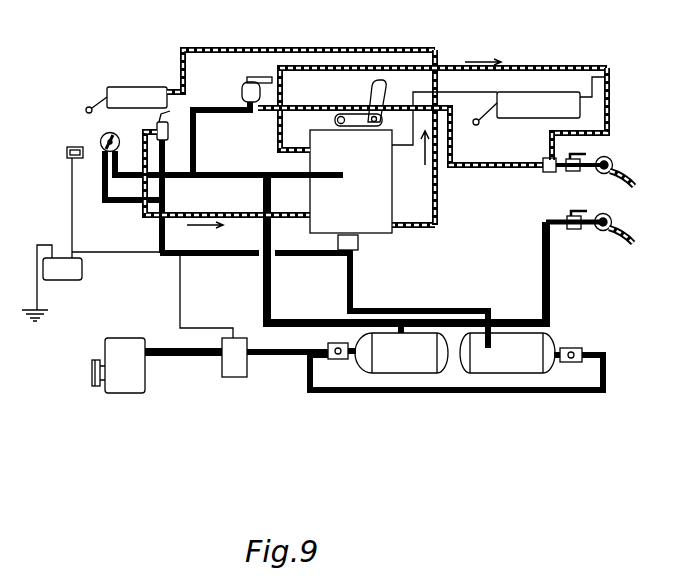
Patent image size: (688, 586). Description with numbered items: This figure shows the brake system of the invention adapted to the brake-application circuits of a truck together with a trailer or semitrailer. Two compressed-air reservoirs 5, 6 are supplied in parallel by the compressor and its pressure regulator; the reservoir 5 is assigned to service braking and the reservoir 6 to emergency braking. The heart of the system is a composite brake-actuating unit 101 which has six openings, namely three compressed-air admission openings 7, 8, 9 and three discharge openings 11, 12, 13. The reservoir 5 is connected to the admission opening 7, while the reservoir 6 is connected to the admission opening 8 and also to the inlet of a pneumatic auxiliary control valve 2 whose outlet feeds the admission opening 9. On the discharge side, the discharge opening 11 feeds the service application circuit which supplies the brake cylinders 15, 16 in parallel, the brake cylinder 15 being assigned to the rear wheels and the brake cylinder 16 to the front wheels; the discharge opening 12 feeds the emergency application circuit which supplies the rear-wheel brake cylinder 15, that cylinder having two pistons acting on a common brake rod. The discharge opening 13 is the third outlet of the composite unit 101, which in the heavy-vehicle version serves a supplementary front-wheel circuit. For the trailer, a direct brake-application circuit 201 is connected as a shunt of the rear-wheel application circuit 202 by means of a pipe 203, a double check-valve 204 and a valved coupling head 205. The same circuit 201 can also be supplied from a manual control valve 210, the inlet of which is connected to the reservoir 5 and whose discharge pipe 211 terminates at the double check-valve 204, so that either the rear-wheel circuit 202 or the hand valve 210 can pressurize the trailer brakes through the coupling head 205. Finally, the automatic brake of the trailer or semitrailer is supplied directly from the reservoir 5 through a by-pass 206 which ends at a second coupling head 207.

The brake cylinder 16 is at (138, 94).
The manual control valve 210 is at (241, 89).
The pneumatic auxiliary control valve 2 is at (168, 137).
The admission opening 7 is at (343, 177).
The admission opening 9 is at (330, 216).
The discharge opening 13 is at (392, 226).
The composite brake-actuating unit 101 is at (436, 183).
The discharge opening 11 is at (312, 152).
The discharge opening 12 is at (392, 146).
The admission opening 8 is at (360, 247).
The brake cylinder 15 is at (512, 110).
The rear-wheel application circuit 202 is at (553, 70).
The pipe 203 is at (609, 98).
The double check-valve 204 is at (550, 173).
The valved coupling head 205 is at (611, 158).
The direct brake-application circuit 201 is at (630, 174).
The discharge pipe 211 is at (519, 168).
The coupling head 207 is at (616, 220).
The by-pass 206 is at (550, 282).
The compressed-air reservoir 5 is at (385, 369).
The compressed-air reservoir 6 is at (495, 369).